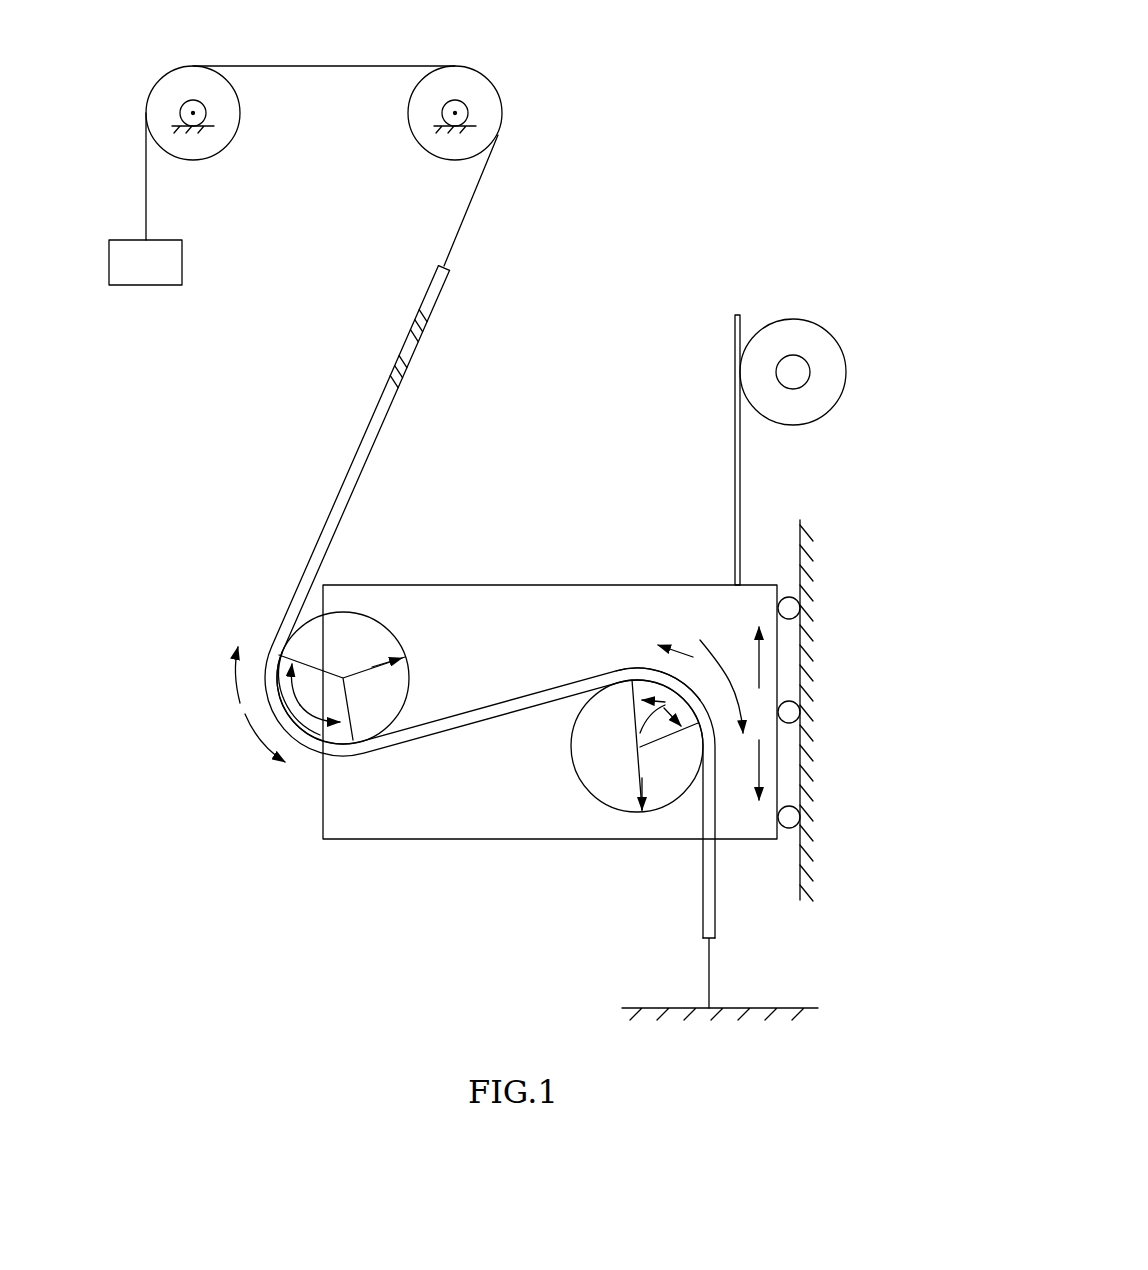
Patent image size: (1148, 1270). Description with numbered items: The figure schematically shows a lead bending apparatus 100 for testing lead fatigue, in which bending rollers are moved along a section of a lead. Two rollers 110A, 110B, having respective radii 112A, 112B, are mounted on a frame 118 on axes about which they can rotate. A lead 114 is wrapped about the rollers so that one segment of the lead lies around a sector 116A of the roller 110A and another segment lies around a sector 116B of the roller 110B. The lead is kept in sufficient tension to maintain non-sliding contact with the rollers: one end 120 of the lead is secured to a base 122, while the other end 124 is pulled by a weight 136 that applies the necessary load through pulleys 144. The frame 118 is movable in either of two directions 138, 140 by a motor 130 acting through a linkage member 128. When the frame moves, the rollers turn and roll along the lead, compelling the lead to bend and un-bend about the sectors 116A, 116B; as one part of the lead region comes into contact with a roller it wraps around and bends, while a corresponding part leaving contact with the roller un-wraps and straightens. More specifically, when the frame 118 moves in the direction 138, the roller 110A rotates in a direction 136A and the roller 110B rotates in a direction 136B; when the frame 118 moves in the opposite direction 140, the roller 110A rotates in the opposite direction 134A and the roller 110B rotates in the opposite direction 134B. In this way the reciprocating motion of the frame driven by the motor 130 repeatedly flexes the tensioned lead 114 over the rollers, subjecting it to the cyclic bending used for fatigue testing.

The lead bending apparatus 100 is at (660, 42).
The pulleys 144 is at (233, 122).
The weight 136 is at (183, 258).
The lead 114 is at (310, 556).
The other end of the lead 124 is at (426, 288).
The one end of the lead 120 is at (718, 926).
The base 122 is at (665, 1008).
The frame 118 is at (455, 585).
The roller 110A is at (343, 620).
The radius of roller 110a 112A is at (412, 656).
The sector of roller 110a 116A is at (311, 716).
The rotation direction of roller 110a 134A is at (232, 682).
The rotation direction of roller 110a 136A is at (255, 745).
The roller 110B is at (598, 778).
The radius of roller 110b 112B is at (645, 816).
The sector of roller 110b 116B is at (605, 741).
The rotation direction of roller 110b 134B is at (713, 672).
The rotation direction of roller 110b 136B is at (700, 640).
The linkage member 128 is at (741, 487).
The motor 130 is at (826, 328).
The frame movement direction 138 is at (760, 655).
The frame movement direction 140 is at (760, 748).